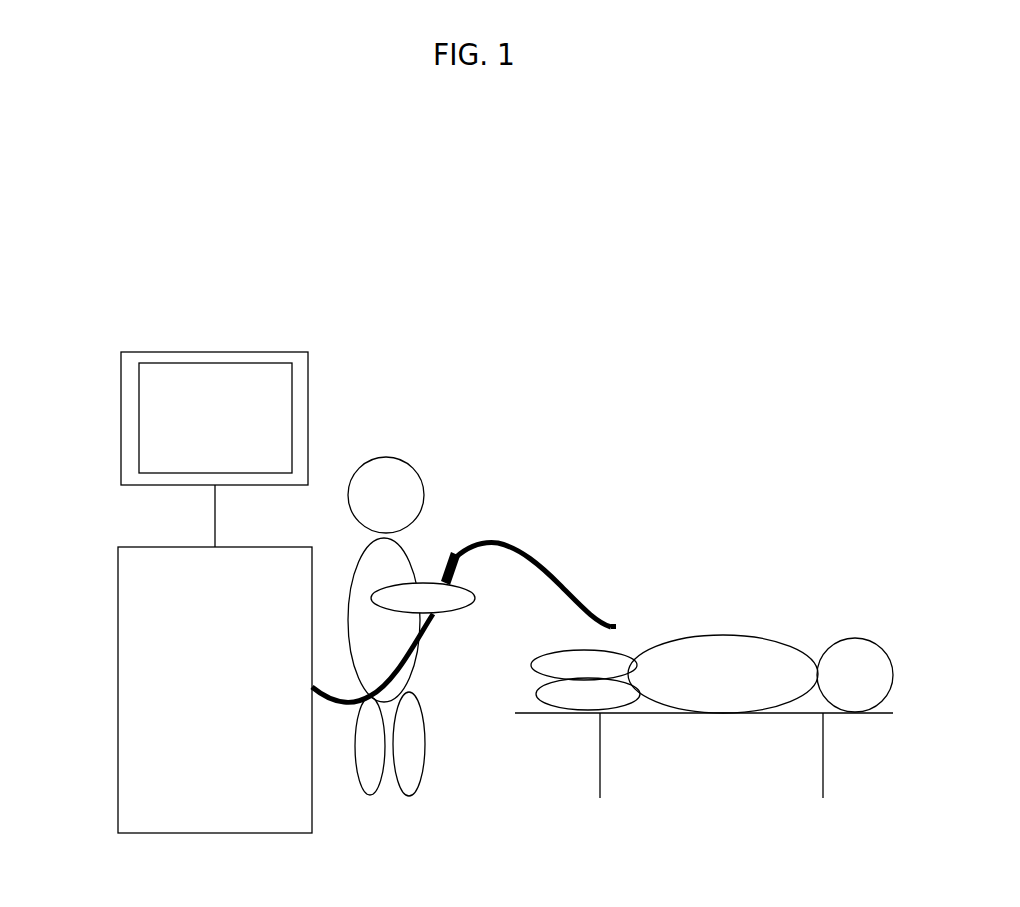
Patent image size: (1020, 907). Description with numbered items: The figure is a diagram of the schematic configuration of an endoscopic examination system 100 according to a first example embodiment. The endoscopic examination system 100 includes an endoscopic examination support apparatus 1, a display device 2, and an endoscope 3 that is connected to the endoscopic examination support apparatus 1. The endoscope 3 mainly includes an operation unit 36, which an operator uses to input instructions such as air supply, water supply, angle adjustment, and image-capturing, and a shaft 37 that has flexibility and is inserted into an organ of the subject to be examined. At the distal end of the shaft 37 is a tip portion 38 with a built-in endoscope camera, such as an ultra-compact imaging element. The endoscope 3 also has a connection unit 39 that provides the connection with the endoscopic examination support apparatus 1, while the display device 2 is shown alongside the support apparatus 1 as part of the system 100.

The endoscopic examination system 100 is at (326, 188).
The endoscopic examination support apparatus 1 is at (118, 580).
The display device 2 is at (121, 385).
The endoscope 3 is at (493, 505).
The operation unit 36 is at (450, 555).
The shaft 37 is at (538, 563).
The tip portion 38 is at (613, 625).
The connection unit 39 is at (317, 693).